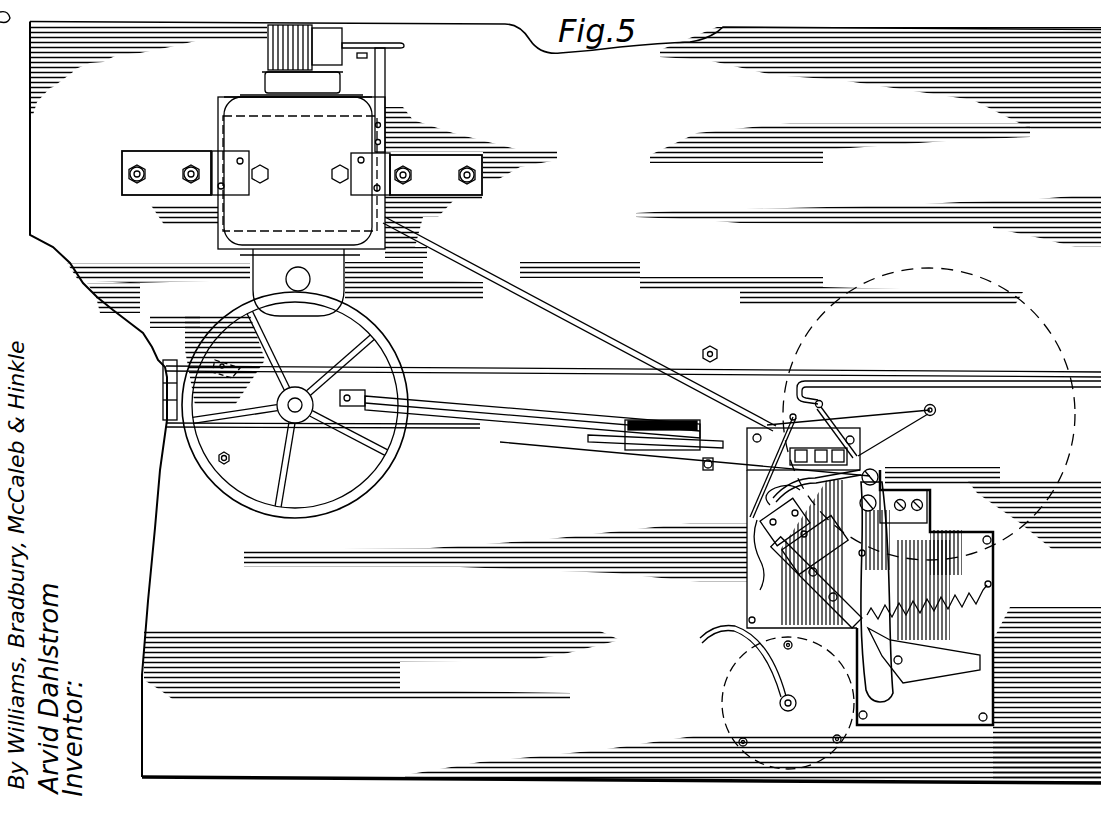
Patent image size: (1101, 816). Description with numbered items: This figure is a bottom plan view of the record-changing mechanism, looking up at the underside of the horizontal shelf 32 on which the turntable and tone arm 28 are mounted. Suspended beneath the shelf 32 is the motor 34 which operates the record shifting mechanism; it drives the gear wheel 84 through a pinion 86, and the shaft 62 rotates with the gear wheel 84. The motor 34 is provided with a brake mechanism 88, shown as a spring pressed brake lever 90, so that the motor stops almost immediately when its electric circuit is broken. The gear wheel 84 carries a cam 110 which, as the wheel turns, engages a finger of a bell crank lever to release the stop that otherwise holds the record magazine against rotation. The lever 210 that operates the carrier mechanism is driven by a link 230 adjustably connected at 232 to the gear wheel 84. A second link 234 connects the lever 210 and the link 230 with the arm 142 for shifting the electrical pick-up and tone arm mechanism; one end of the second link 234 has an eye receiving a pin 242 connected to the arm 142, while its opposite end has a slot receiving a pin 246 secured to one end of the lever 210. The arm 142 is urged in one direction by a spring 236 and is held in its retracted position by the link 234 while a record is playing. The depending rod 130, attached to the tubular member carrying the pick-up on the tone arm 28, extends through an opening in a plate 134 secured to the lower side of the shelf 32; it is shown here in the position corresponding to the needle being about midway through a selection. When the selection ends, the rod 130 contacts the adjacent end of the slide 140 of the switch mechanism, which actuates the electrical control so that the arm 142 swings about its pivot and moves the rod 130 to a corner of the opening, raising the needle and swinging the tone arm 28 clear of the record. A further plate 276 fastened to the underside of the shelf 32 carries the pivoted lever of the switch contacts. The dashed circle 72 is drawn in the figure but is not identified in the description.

The tone arm 28 is at (722, 686).
The horizontal shelf 32 is at (565, 403).
The motor 34 is at (265, 80).
The shaft 62 is at (297, 412).
The dashed circle (path) 72 is at (1017, 297).
The gear wheel 84 is at (212, 365).
The pinion 86 is at (286, 281).
The brake mechanism 88 is at (385, 77).
The spring pressed brake lever 90 is at (404, 44).
The cam 110 is at (166, 378).
The depending rod 130 is at (898, 662).
The plate 134 is at (983, 563).
The slide 140 is at (882, 636).
The arm 142 is at (873, 587).
The lever 210 is at (680, 450).
The link 230 is at (490, 420).
The adjustable connection 232 is at (367, 396).
The second link 234 is at (608, 445).
The spring 236 is at (975, 598).
The pin 242 is at (885, 470).
The pin 246 is at (708, 470).
The plate 276 is at (745, 589).